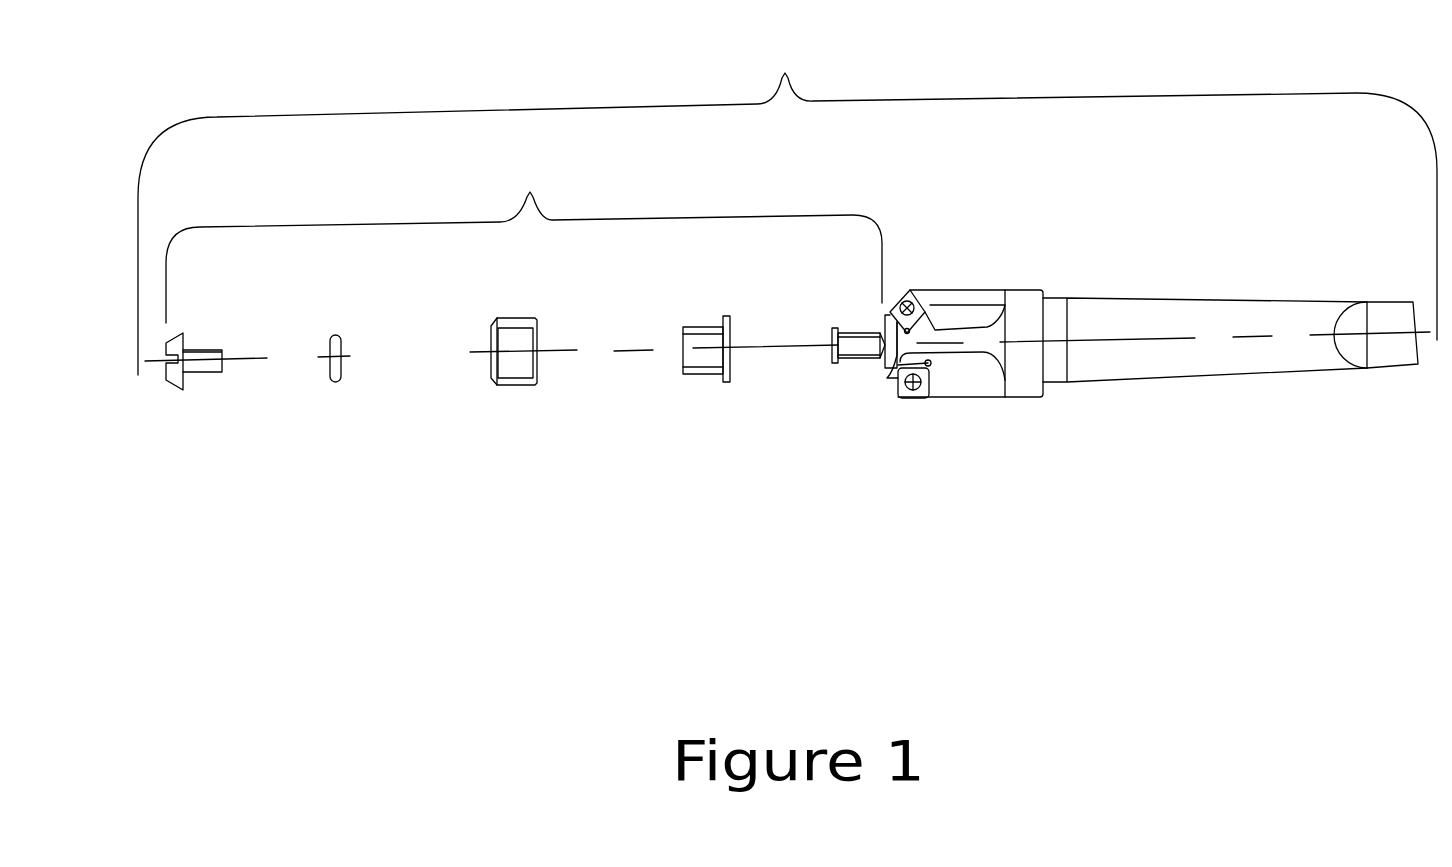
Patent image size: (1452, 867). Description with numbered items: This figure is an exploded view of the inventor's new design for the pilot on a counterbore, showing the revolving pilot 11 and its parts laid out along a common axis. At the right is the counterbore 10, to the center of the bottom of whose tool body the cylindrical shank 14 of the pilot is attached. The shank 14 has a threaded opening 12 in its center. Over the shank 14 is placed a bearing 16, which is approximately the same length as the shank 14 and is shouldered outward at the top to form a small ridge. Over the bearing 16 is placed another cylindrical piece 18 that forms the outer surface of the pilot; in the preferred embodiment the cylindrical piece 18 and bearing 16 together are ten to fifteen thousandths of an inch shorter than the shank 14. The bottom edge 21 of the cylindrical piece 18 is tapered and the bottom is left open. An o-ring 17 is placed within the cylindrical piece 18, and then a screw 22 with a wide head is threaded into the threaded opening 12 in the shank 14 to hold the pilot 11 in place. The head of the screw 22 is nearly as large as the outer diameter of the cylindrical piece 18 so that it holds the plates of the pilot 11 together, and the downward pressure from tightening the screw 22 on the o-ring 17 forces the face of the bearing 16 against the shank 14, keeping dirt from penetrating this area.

The counterbore 10 is at (787, 206).
The revolving pilot 11 is at (1228, 540).
The threaded opening 12 is at (832, 363).
The cylindrical shank 14 is at (862, 363).
The bearing 16 is at (693, 375).
The o-ring 17 is at (336, 382).
The cylindrical piece 18 is at (519, 388).
The bottom edge 21 is at (491, 385).
The screw 22 is at (202, 372).